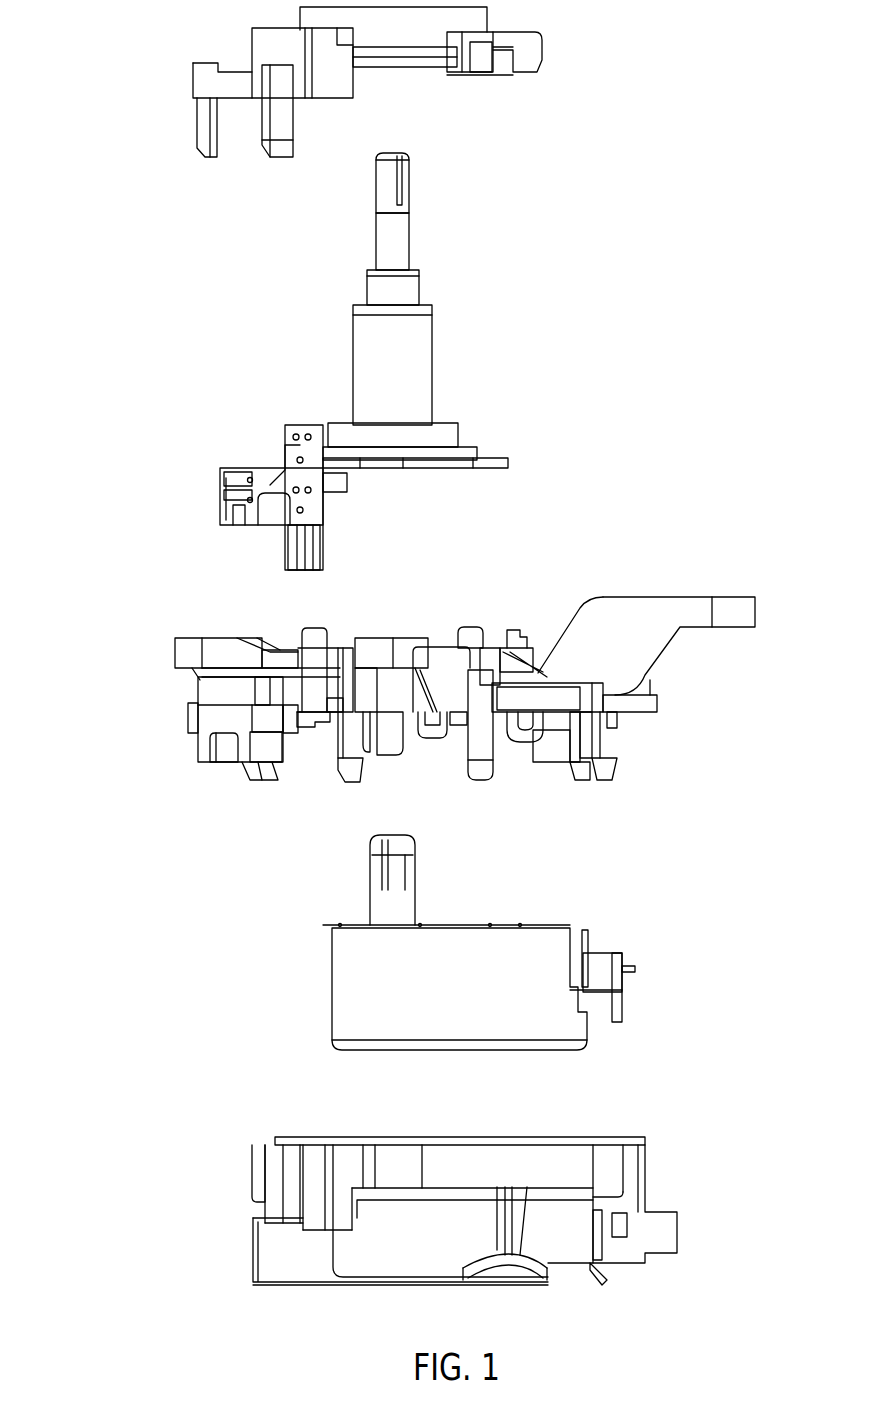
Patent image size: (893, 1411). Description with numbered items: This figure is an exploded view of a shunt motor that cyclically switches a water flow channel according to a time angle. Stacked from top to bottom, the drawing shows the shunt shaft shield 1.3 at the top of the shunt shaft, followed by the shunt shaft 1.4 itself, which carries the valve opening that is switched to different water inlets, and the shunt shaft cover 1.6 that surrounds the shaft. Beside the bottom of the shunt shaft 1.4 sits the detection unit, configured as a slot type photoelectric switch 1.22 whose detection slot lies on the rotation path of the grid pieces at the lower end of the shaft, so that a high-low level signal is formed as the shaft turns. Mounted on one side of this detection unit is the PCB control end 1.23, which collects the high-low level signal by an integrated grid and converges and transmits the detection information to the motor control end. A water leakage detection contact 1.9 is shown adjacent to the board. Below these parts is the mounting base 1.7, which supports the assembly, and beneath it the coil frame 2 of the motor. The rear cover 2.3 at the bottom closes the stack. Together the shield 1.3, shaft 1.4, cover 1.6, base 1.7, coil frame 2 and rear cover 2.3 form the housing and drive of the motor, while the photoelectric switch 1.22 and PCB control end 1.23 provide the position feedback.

The shunt shaft shield 1.3 is at (493, 73).
The shunt shaft 1.4 is at (392, 180).
The shunt shaft cover 1.6 is at (430, 437).
The mounting base 1.7 is at (595, 637).
The water leakage detection contact 1.9 is at (290, 550).
The photoelectric switch 1.22 is at (335, 443).
The PCB control end 1.23 is at (233, 473).
The coil frame 2 is at (587, 930).
The rear cover 2.3 is at (592, 1180).